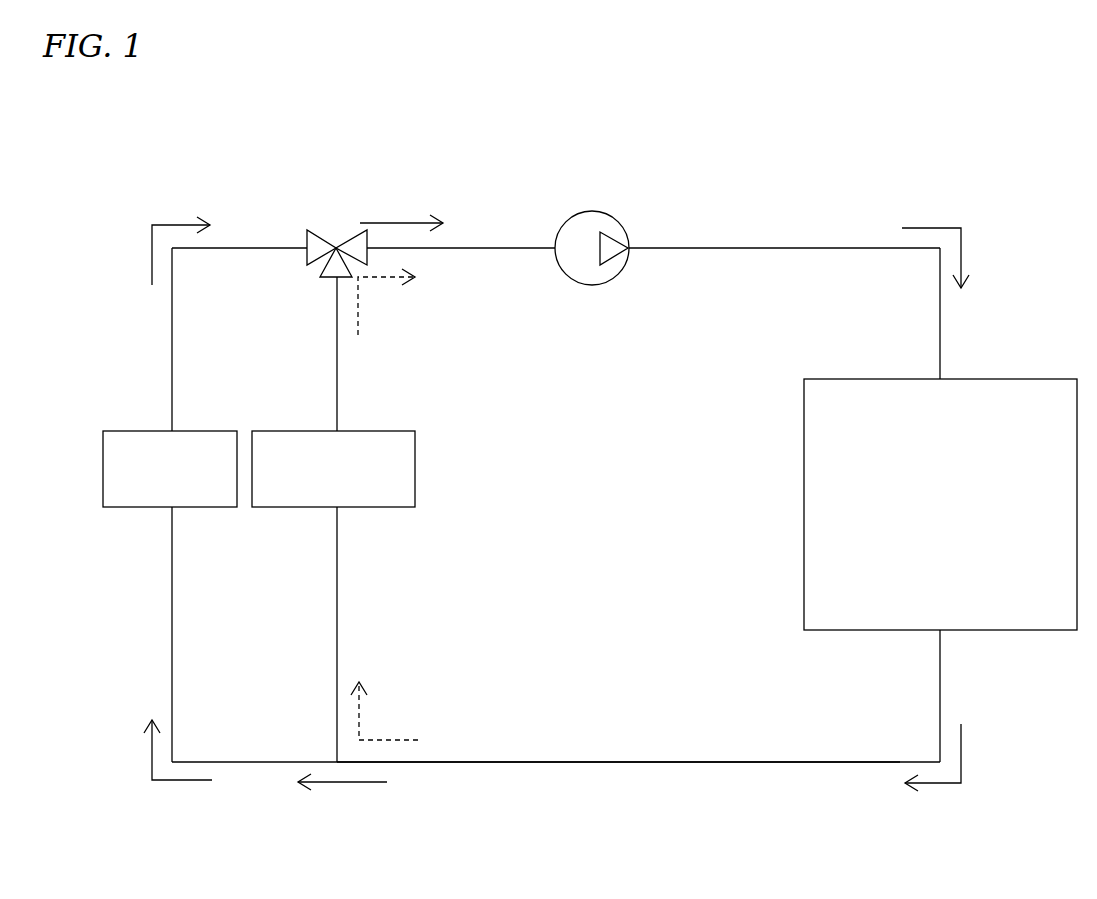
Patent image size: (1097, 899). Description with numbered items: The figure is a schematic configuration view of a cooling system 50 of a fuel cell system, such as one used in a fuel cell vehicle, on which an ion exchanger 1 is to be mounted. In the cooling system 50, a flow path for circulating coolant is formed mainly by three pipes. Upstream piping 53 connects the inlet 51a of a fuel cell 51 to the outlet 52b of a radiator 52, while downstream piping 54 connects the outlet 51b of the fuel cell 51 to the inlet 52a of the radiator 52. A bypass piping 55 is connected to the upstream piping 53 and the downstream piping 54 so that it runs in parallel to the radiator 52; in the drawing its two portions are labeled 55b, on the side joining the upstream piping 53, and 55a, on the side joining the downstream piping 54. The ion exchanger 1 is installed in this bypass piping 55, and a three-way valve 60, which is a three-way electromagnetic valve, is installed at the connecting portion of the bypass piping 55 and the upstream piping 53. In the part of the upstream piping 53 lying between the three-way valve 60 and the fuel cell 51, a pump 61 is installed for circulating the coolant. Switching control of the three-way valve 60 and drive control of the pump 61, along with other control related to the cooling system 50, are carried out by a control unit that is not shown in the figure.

The ion exchanger 1 is at (355, 431).
The cooling system 50 is at (227, 178).
The fuel cell 51 is at (1028, 378).
The inlet of the fuel cell 51a is at (948, 379).
The outlet of the fuel cell 51b is at (940, 630).
The radiator 52 is at (155, 430).
The inlet of the radiator 52a is at (172, 507).
The outlet of the radiator 52b is at (172, 430).
The upstream piping 53 is at (730, 248).
The downstream piping 54 is at (585, 762).
The bypass piping 55 is at (400, 519).
The bypass pipe upstream portion 55a is at (337, 663).
The bypass pipe downstream portion 55b is at (337, 353).
The three-way valve 60 is at (336, 248).
The pump 61 is at (592, 285).